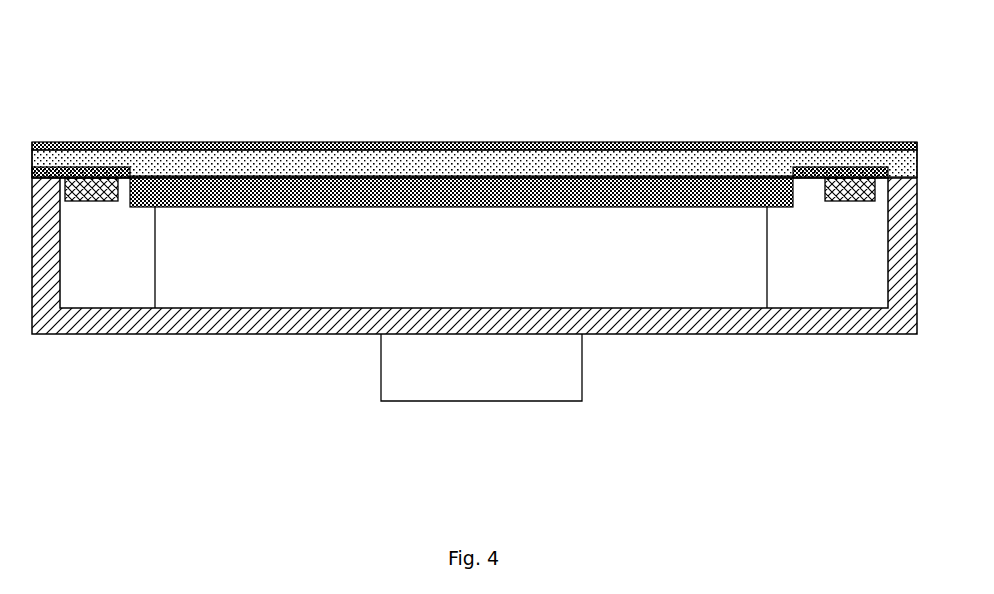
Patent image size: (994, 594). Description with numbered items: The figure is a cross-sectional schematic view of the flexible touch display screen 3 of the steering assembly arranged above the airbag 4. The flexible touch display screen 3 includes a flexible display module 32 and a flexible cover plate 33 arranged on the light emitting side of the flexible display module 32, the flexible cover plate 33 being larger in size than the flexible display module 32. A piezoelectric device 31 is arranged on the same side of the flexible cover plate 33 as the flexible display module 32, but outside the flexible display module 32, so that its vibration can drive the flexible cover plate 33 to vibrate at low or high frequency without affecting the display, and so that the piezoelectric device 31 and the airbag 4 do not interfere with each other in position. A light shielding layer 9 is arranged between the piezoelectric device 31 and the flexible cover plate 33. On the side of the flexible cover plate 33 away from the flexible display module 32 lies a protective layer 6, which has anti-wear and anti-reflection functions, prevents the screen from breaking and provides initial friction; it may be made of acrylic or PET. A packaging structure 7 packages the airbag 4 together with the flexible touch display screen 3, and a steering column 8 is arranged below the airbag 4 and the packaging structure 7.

The flexible touch display screen 3 is at (474, 111).
The airbag 4 is at (557, 243).
The protective layer 6 is at (440, 148).
The packaging structure 7 is at (820, 322).
The steering column 8 is at (482, 366).
The light shielding layer 9 is at (85, 180).
The piezoelectric device 31 is at (107, 173).
The flexible display module 32 is at (125, 67).
The flexible cover plate 33 is at (202, 160).